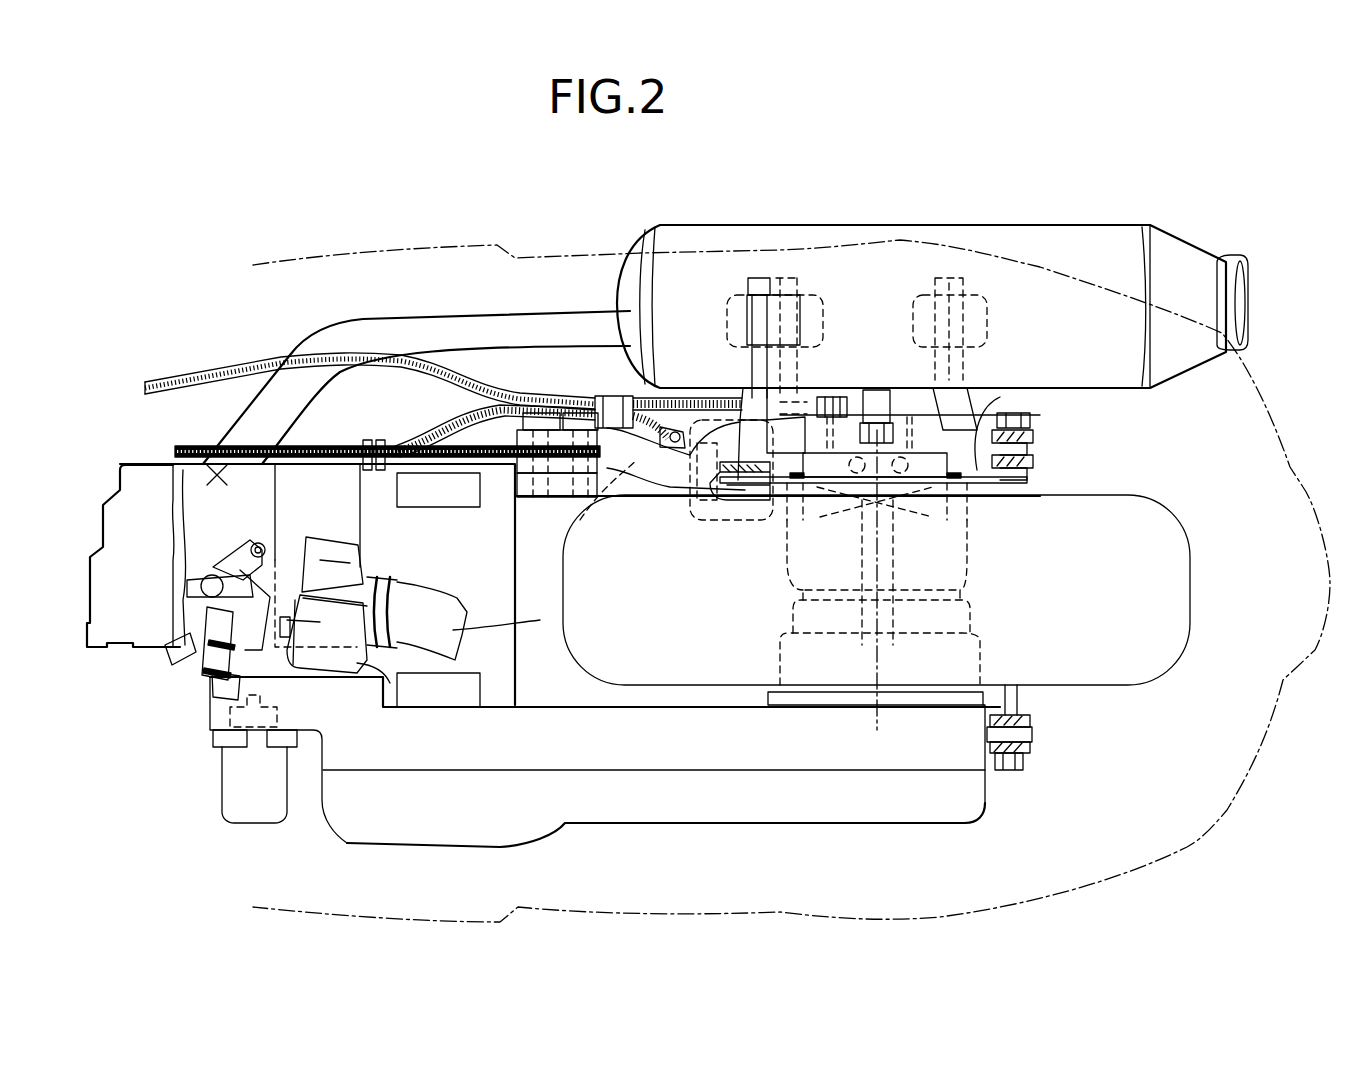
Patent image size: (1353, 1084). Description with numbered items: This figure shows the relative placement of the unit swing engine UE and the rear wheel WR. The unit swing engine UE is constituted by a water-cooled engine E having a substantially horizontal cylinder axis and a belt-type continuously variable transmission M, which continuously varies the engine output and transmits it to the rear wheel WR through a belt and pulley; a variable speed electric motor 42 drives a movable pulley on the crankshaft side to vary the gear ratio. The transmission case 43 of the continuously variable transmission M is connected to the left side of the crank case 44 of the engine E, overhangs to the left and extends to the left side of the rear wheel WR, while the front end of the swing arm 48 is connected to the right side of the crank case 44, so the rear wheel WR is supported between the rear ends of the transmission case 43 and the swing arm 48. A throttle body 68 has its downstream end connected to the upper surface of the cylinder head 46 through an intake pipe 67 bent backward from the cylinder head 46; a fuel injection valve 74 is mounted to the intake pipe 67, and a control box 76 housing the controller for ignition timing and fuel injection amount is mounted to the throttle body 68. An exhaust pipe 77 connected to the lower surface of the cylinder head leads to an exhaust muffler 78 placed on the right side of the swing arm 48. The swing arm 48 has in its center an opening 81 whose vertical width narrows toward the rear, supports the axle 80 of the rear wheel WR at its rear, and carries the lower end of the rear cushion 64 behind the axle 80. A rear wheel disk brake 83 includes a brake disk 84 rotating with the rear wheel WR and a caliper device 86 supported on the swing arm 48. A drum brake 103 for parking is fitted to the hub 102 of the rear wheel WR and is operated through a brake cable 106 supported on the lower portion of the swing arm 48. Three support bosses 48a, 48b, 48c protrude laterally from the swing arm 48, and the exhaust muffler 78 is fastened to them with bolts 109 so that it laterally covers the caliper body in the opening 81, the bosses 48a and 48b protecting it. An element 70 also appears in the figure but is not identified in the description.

The variable speed electric motor 42 is at (270, 767).
The transmission case 43 is at (573, 808).
The crank case 44 is at (505, 620).
The cylinder head 46 is at (220, 455).
The swing arm 48 is at (969, 464).
The support boss 48a is at (750, 380).
The support boss 48b is at (800, 373).
The support boss 48c is at (967, 380).
The rear cushion 64 is at (1033, 436).
The intake pipe 67 is at (257, 660).
The throttle body 68 is at (345, 580).
The intake duct 70 is at (500, 632).
The fuel injection valve 74 is at (220, 578).
The control box 76 is at (360, 653).
The exhaust pipe 77 is at (382, 323).
The exhaust muffler 78 is at (835, 232).
The axle 80 is at (937, 575).
The opening 81 is at (575, 527).
The rear wheel disk brake 83 is at (987, 400).
The brake disk 84 is at (1033, 470).
The caliper device 86 is at (703, 532).
The hub 102 is at (975, 520).
The drum brake 103 is at (802, 512).
The brake cable 106 is at (440, 410).
The bolts 109 is at (782, 285).
The rear wheel WR is at (1183, 577).
The water-cooled engine E is at (192, 725).
The belt-type continuously variable transmission M is at (308, 811).
The unit swing engine UE is at (267, 888).